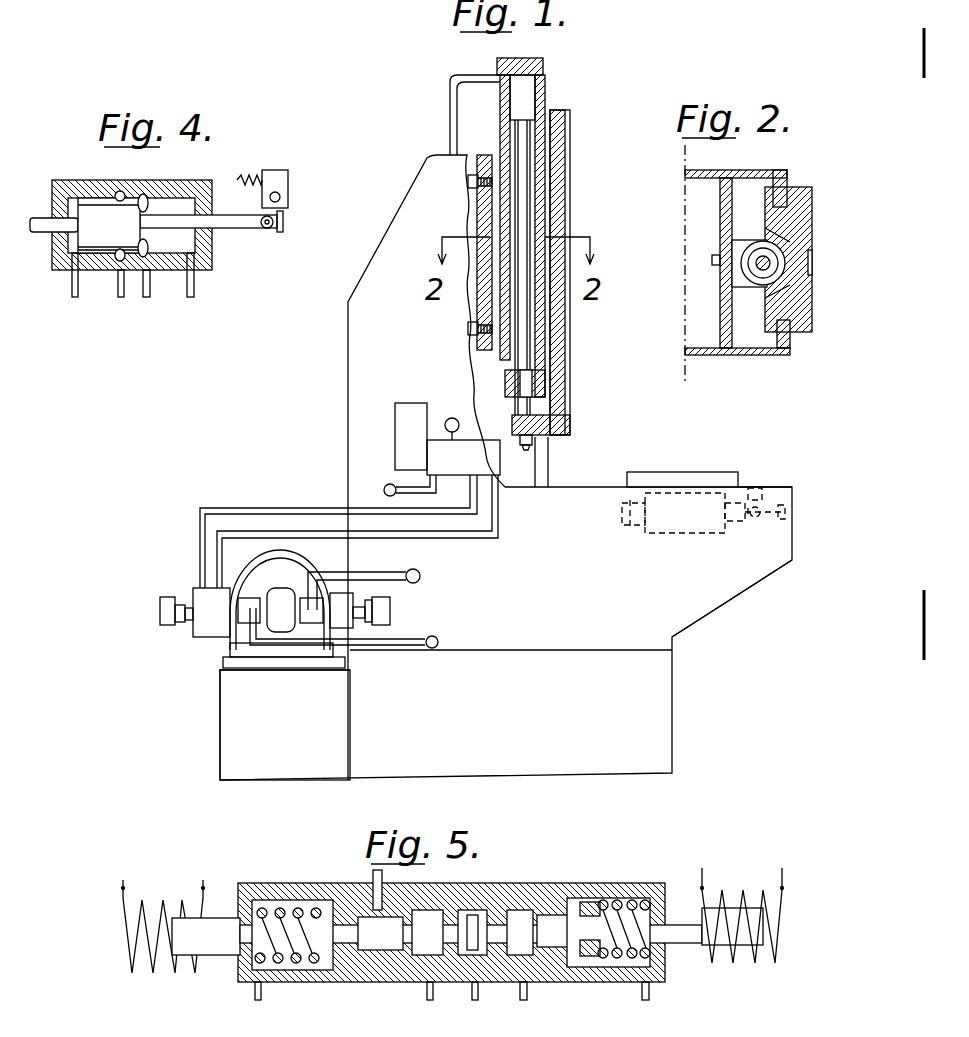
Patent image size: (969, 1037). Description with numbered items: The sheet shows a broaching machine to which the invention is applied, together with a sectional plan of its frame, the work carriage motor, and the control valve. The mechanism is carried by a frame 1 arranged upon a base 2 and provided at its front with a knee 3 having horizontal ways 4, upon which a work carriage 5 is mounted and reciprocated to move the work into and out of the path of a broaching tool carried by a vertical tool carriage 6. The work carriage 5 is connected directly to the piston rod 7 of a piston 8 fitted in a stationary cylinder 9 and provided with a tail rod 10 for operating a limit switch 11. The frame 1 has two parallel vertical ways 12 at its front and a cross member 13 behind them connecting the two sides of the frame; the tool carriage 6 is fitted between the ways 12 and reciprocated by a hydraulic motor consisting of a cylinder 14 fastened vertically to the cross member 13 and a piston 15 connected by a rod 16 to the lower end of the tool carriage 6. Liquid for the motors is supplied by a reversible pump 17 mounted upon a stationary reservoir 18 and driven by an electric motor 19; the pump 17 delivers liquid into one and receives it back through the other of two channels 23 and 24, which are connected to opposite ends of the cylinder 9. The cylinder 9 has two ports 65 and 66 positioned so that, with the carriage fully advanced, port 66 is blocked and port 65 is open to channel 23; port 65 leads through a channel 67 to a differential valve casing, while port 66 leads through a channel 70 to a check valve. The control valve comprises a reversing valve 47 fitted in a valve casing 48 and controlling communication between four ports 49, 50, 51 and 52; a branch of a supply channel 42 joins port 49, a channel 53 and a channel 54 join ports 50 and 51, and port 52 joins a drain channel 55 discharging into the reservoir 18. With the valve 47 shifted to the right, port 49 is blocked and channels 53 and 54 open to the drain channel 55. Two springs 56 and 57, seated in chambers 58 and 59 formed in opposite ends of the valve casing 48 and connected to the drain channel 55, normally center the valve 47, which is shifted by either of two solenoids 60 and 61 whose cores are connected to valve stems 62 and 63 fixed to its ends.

In FIG. 1, the frame 1 is at (358, 384).
In FIG. 2, the frame 1 is at (752, 354).
In FIG. 1, the base 2 is at (506, 633).
In FIG. 1, the knee 3 is at (680, 605).
In FIG. 1, the ways 4 is at (762, 481).
In FIG. 1, the work carriage 5 is at (665, 472).
In FIG. 1, the tool carriage 6 is at (570, 158).
In FIG. 2, the tool carriage 6 is at (812, 302).
In FIG. 1, the piston rod 7 is at (640, 530).
In FIG. 4, the piston rod 7 is at (45, 232).
In FIG. 4, the piston 8 is at (109, 225).
In FIG. 1, the cylinder 9 is at (690, 525).
In FIG. 4, the cylinder 9 is at (75, 184).
In FIG. 1, the tail rod 10 is at (738, 520).
In FIG. 4, the tail rod 10 is at (232, 228).
In FIG. 1, the limit switch 11 is at (772, 492).
In FIG. 4, the limit switch 11 is at (282, 178).
In FIG. 1, the vertical ways 12 is at (549, 461).
In FIG. 2, the vertical ways 12 is at (790, 185).
In FIG. 1, the cross member 13 is at (486, 205).
In FIG. 2, the cross member 13 is at (726, 298).
In FIG. 1, the cylinder 14 is at (500, 124).
In FIG. 1, the piston 15 is at (537, 103).
In FIG. 2, the piston 15 is at (786, 258).
In FIG. 1, the rod 16 is at (522, 406).
In FIG. 2, the rod 16 is at (762, 258).
In FIG. 1, the reversible pump 17 is at (235, 647).
In FIG. 1, the reservoir 18 is at (285, 725).
In FIG. 1, the electric motor 19 is at (270, 555).
In FIG. 4, the channel 23 is at (195, 288).
In FIG. 4, the channel 24 is at (76, 291).
In FIG. 5, the supply channel 42 is at (375, 880).
In FIG. 5, the reversing valve 47 is at (471, 937).
In FIG. 5, the valve casing 48 is at (300, 890).
In FIG. 5, the port 49 is at (378, 953).
In FIG. 5, the port 50 is at (425, 912).
In FIG. 5, the port 51 is at (470, 912).
In FIG. 5, the port 52 is at (520, 912).
In FIG. 5, the channel 53 is at (430, 992).
In FIG. 5, the channel 54 is at (478, 995).
In FIG. 5, the drain channel 55 is at (262, 1000).
In FIG. 5, the spring 56 is at (285, 910).
In FIG. 5, the spring 57 is at (605, 903).
In FIG. 5, the chamber 58 is at (295, 975).
In FIG. 5, the chamber 59 is at (640, 903).
In FIG. 5, the solenoid 60 is at (185, 870).
In FIG. 5, the solenoid 61 is at (768, 862).
In FIG. 5, the valve stem 62 is at (245, 935).
In FIG. 5, the valve stem 63 is at (683, 930).
In FIG. 4, the port 65 is at (145, 195).
In FIG. 4, the port 66 is at (120, 192).
In FIG. 4, the channel 67 is at (146, 292).
In FIG. 4, the channel 70 is at (120, 292).